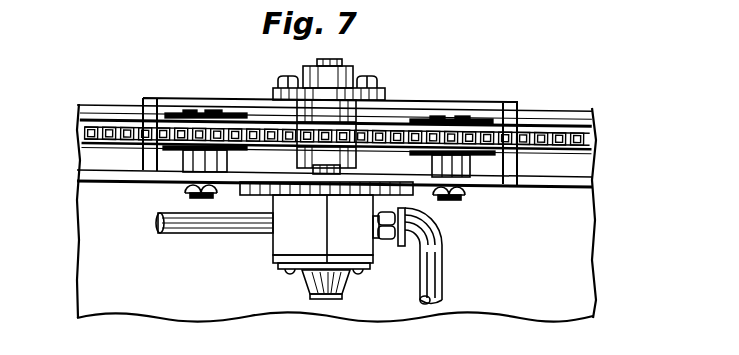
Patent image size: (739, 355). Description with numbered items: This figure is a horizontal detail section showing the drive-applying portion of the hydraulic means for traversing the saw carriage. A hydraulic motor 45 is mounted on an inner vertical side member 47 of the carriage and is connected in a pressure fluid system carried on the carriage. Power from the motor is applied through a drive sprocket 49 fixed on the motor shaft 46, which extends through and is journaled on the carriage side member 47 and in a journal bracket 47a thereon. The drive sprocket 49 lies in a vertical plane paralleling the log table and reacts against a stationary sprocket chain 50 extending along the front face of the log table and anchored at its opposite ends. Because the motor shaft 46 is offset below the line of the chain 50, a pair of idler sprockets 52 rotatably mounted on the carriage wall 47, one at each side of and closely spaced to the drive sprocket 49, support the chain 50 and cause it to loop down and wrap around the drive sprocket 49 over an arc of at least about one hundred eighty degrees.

The hydraulic motor 45 is at (279, 246).
The motor shaft 46 is at (353, 171).
The inner vertical side member 47 is at (558, 180).
The journal bracket 47a is at (410, 106).
The drive sprocket 49 is at (309, 129).
The stationary sprocket chain 50 is at (123, 135).
The idler sprockets 52 is at (200, 135).